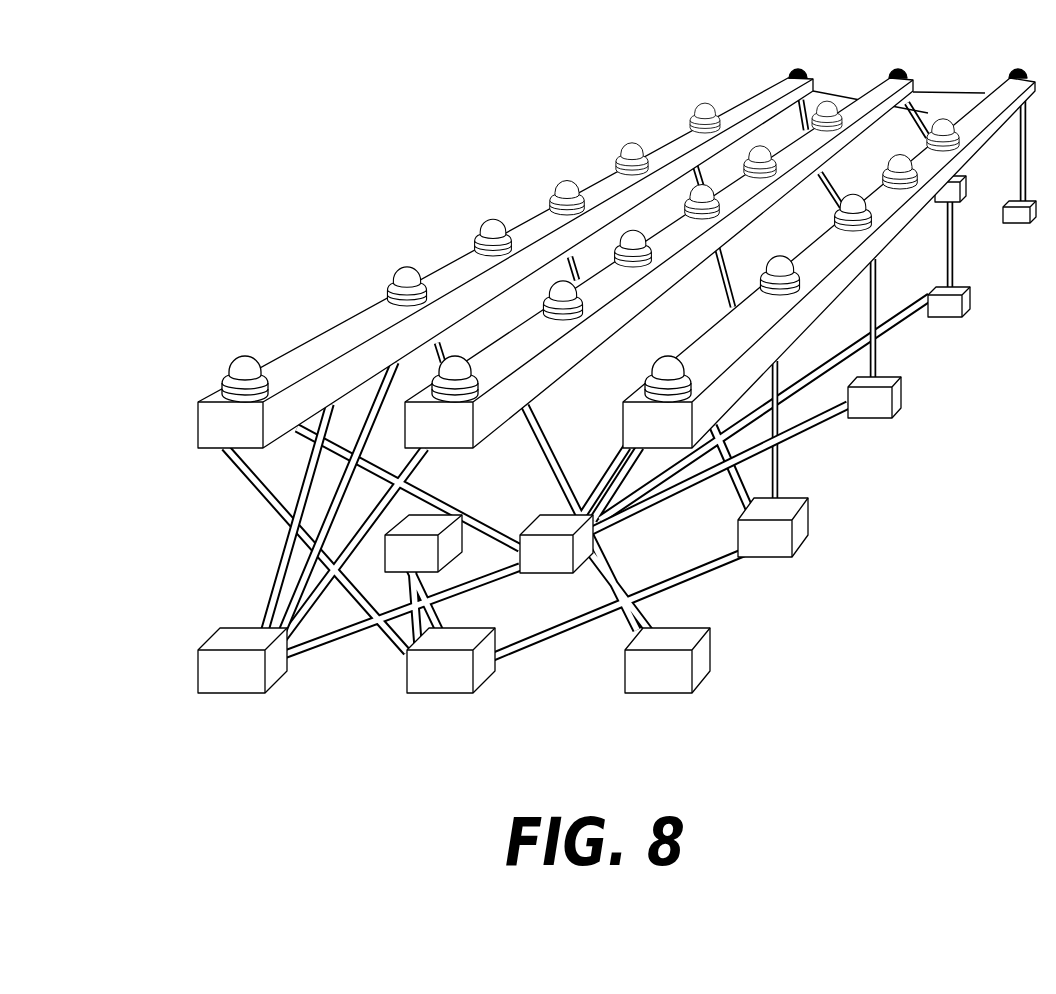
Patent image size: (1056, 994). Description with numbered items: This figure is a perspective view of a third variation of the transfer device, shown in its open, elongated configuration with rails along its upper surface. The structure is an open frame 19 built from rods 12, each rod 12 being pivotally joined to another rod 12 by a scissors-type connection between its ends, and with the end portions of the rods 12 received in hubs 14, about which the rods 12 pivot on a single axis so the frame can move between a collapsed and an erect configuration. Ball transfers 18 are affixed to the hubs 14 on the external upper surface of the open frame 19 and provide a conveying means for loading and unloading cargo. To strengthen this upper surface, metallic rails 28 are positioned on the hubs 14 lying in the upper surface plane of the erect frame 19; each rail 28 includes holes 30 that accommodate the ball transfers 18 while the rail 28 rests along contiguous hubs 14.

The rod 12 is at (800, 427).
The hub 14 is at (233, 687).
The ball transfer 18 is at (250, 360).
The open frame 19 is at (272, 565).
The metallic rail 28 is at (530, 228).
The hole 30 is at (382, 304).